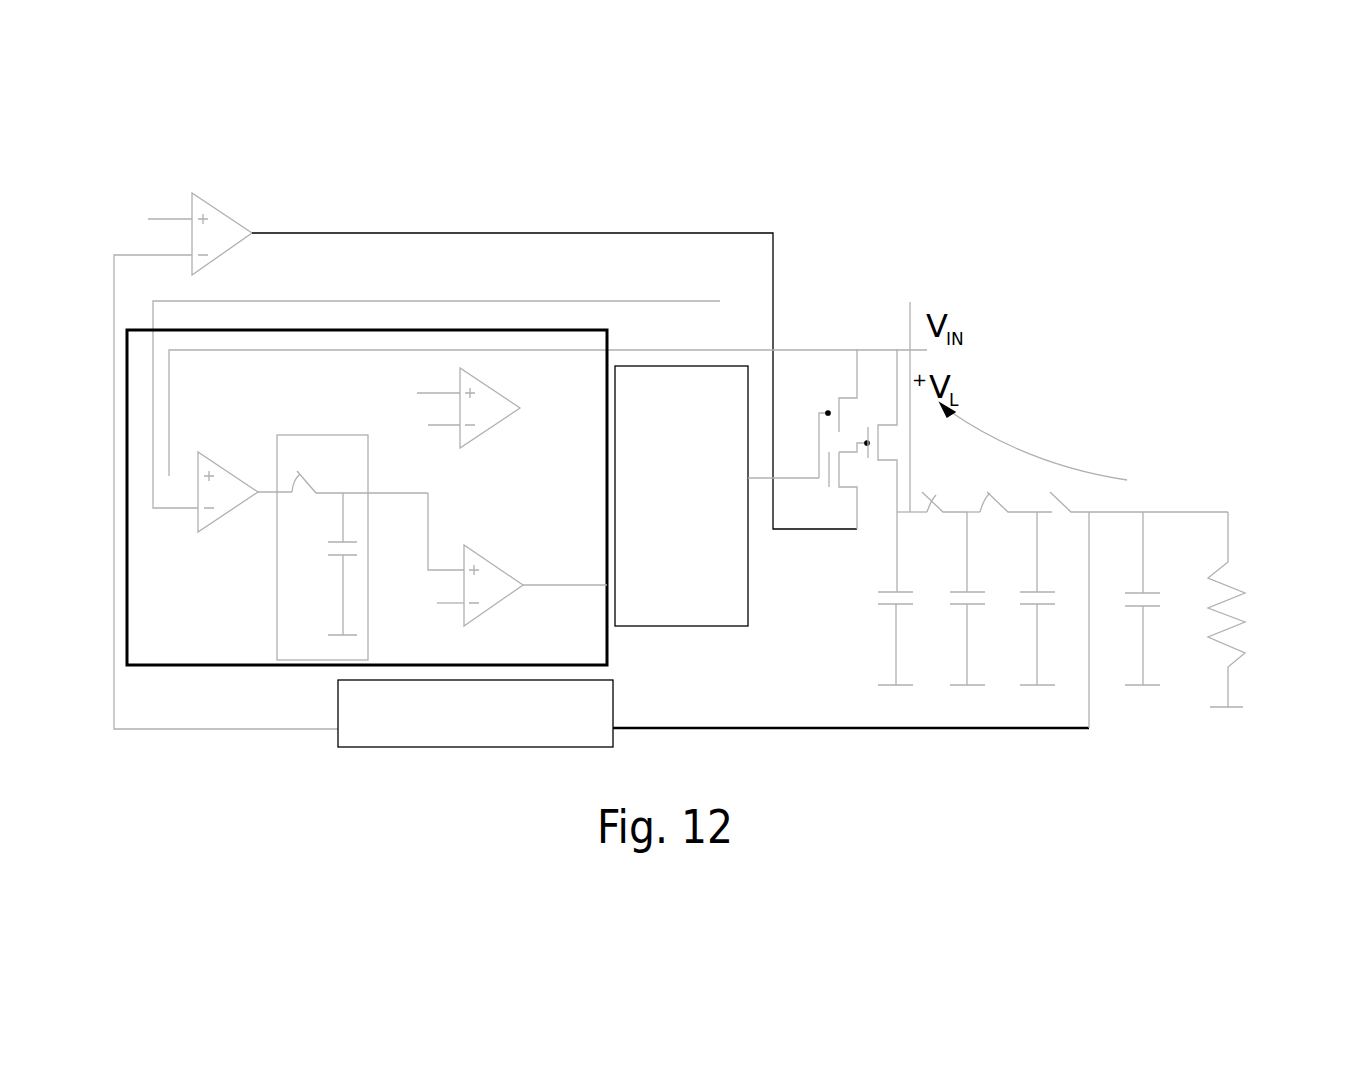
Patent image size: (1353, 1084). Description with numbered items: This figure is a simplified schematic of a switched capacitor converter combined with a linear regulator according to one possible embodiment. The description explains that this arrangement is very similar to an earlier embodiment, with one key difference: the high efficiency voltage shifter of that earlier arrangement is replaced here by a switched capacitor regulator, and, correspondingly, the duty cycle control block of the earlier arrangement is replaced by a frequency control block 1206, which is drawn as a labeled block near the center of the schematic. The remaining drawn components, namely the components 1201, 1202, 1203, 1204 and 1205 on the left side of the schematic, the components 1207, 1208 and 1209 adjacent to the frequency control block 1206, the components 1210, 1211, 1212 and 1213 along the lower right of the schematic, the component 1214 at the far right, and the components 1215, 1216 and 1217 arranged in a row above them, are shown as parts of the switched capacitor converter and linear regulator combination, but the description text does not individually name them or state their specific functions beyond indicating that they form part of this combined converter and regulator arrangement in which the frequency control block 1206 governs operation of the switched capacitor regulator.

The reference voltage input 1201 is at (187, 214).
The feedback wire 1202 is at (135, 250).
The error amplifier 1203 is at (210, 200).
The hysteretic comparator block 1204 is at (200, 667).
The feedback filter 1205 is at (338, 735).
The frequency control block 1206 is at (712, 626).
The transistor 1207 is at (837, 397).
The transistor 1208 is at (835, 488).
The switching transistor 1209 is at (875, 463).
The capacitor C1 1210 is at (888, 607).
The capacitor C2 1211 is at (958, 607).
The capacitor C3 1212 is at (1030, 607).
The output capacitor C 1213 is at (1147, 606).
The load resistor 1214 is at (1245, 593).
The switch 1215 is at (937, 502).
The switch 1216 is at (1004, 503).
The switch 1217 is at (1065, 503).